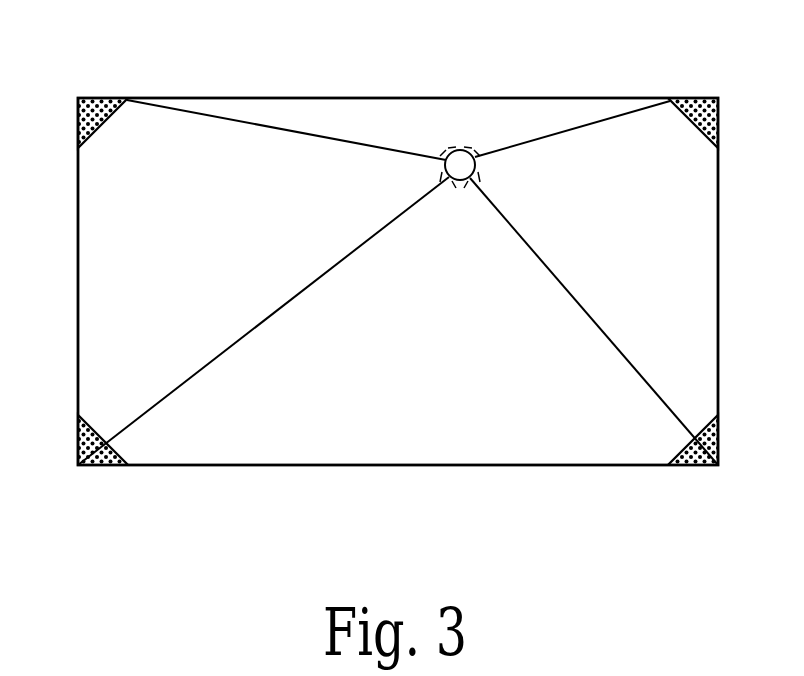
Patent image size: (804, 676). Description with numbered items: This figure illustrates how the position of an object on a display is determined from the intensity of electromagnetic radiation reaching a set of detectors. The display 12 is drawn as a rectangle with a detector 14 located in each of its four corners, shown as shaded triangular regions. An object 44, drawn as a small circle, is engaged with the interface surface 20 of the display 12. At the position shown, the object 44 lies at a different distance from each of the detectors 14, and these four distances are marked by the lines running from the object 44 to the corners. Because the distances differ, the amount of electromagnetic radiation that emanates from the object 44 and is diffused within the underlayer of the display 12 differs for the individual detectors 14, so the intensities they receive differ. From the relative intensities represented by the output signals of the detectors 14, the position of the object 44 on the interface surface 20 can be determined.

The display 12 is at (337, 110).
The detectors 14 is at (82, 133).
The interface surface 20 is at (421, 346).
The object 44 is at (458, 150).